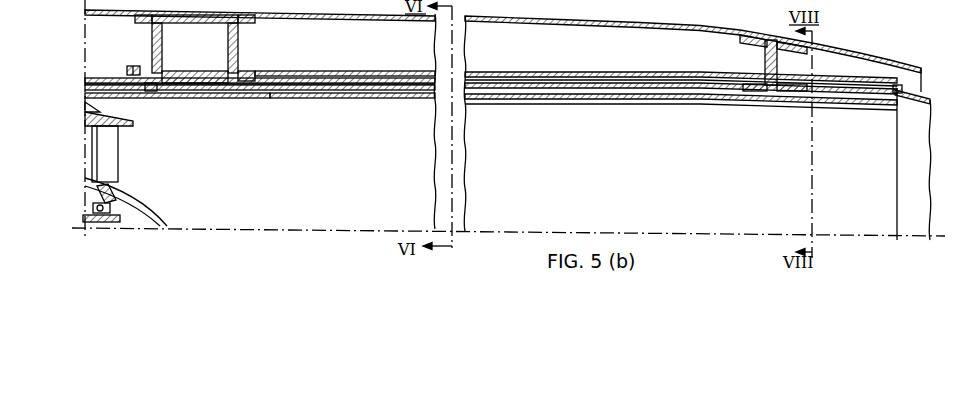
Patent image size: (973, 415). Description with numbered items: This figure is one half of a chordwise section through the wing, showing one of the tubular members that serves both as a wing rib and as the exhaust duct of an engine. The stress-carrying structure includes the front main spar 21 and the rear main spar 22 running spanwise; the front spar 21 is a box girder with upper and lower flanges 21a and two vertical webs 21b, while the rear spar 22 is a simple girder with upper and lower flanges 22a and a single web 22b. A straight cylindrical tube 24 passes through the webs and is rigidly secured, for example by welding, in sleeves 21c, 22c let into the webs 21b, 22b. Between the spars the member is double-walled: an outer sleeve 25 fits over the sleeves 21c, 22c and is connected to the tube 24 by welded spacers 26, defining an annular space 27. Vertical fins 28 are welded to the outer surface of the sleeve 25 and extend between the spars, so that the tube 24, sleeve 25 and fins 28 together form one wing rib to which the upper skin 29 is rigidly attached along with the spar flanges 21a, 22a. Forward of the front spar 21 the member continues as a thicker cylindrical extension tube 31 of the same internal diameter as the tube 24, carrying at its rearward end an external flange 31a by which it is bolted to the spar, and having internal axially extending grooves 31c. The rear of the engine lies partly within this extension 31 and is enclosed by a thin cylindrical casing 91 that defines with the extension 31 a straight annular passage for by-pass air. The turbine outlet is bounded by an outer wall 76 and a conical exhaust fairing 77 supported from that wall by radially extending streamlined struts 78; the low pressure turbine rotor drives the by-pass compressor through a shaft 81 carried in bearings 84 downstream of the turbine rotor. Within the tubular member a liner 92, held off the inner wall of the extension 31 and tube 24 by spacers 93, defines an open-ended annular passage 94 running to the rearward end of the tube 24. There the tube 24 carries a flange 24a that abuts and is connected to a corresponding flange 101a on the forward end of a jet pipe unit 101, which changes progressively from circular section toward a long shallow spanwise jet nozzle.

The front main spar 21 is at (216, 41).
The upper and lower flanges 21a is at (252, 26).
The vertical webs 21b is at (228, 50).
The sleeve 21c is at (248, 78).
The rear main spar 22 is at (777, 45).
The upper and lower flanges 22a is at (756, 44).
The web 22b is at (781, 68).
The sleeve 22c is at (800, 89).
The tube 24 is at (575, 98).
The flange 24a is at (894, 88).
The outer sleeve 25 is at (575, 80).
The spacers 26 is at (513, 82).
The annular space 27 is at (630, 84).
The fins 28 is at (404, 62).
The upper skin 29 is at (331, 15).
The extension tube 31 is at (235, 68).
The external flange 31a is at (131, 67).
The internal axially extending grooves 31c is at (90, 84).
The outer wall 76 is at (108, 117).
The conical exhaust fairing 77 is at (143, 208).
The radially extending streamlined struts 78 is at (113, 158).
The shaft 81 is at (103, 222).
The bearings 84 is at (83, 214).
The cylindrical shell or casing 91 is at (85, 104).
The liner 92 is at (242, 93).
The spacers 93 is at (148, 88).
The annular passage 94 is at (298, 96).
The jet pipe unit 101 is at (934, 150).
The flange 101a is at (898, 88).